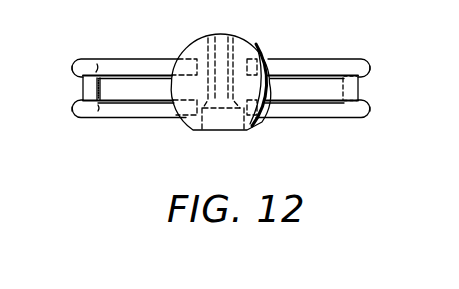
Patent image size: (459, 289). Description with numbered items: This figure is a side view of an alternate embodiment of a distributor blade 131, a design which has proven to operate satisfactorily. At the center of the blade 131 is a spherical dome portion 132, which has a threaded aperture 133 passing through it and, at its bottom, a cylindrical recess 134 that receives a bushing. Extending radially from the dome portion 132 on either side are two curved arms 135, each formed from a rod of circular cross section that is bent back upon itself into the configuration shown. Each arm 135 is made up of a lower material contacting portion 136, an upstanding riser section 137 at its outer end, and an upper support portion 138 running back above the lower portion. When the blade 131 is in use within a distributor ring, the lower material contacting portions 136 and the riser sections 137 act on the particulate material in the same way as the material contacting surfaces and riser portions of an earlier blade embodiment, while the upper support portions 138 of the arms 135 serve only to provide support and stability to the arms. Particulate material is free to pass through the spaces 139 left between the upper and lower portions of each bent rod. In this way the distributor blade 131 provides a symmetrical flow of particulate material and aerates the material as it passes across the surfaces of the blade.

The distributor blade 131 is at (258, 44).
The spherical dome portion 132 is at (202, 60).
The threaded aperture 133 is at (221, 46).
The cylindrical recess 134 is at (222, 131).
The arm 135 is at (92, 117).
The lower material contacting portion 136 is at (137, 112).
The riser section 137 is at (85, 90).
The upper support portion 138 is at (140, 68).
The space 139 is at (122, 83).